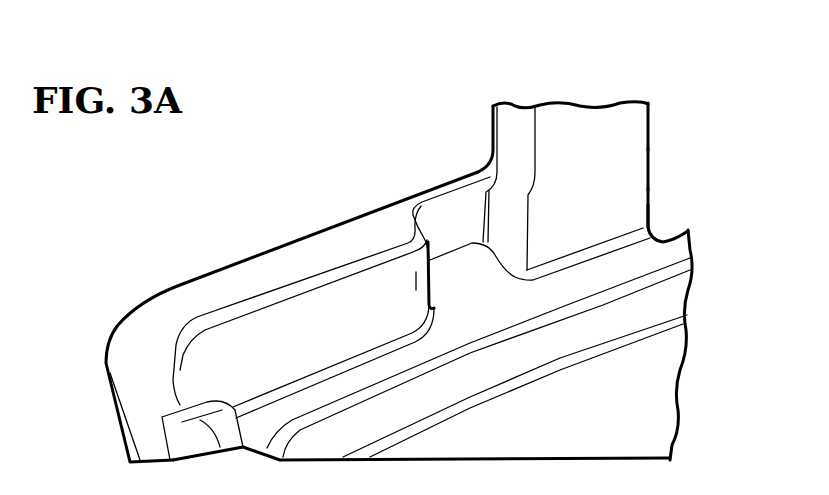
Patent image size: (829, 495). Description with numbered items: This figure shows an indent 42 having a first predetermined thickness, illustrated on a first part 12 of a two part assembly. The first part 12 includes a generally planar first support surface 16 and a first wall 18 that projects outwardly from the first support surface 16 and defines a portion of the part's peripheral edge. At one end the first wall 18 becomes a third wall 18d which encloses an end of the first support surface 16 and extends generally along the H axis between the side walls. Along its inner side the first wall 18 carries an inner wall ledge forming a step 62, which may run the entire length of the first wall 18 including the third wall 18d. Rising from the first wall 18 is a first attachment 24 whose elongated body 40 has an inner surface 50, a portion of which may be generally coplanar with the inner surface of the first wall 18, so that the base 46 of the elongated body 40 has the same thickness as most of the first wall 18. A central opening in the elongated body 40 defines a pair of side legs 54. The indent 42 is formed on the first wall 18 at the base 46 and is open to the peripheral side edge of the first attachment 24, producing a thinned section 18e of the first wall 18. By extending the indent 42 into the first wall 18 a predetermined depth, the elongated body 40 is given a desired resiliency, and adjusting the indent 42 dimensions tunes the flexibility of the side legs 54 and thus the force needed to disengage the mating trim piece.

The first part 12 is at (615, 78).
The first support surface 16 is at (432, 345).
The first wall 18 is at (170, 252).
The third wall 18d is at (260, 277).
The thinned section 18e is at (440, 190).
The first attachment 24 is at (466, 132).
The elongated body 40 is at (678, 160).
The indent 42 is at (472, 290).
The base 46 is at (630, 207).
The inner surface 50 is at (633, 117).
The side legs 54 is at (620, 141).
The step 62 is at (563, 288).